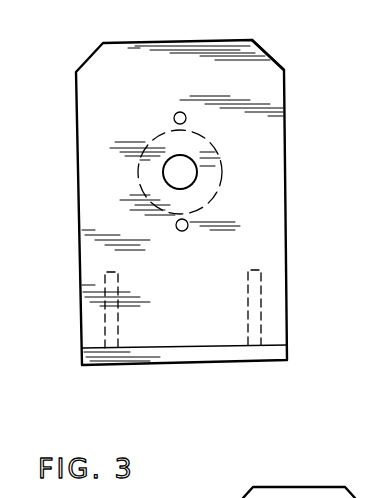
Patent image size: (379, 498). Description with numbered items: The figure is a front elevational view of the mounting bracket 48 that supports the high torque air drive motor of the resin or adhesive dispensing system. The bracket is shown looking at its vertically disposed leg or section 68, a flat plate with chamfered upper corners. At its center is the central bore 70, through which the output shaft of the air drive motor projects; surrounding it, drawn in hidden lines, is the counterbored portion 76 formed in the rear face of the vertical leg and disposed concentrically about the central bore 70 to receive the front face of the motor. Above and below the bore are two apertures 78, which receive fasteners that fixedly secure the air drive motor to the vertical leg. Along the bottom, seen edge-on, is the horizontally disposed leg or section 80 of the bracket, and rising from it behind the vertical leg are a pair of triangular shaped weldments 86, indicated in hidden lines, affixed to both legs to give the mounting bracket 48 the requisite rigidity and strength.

The mounting bracket 48 is at (250, 40).
The vertically disposed leg or section 68 is at (203, 305).
The central bore 70 is at (197, 185).
The counterbored portion 76 is at (220, 150).
The apertures 78 is at (174, 118).
The horizontally disposed leg or section 80 is at (177, 358).
The triangular shaped weldments 86 is at (107, 318).